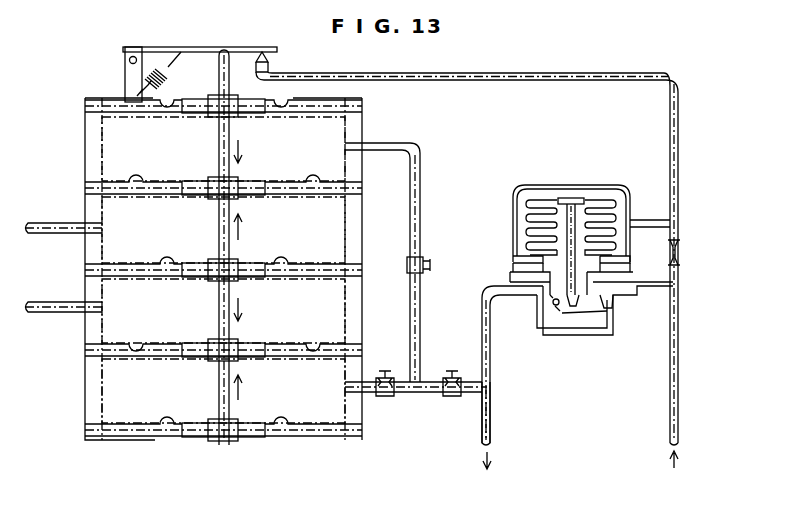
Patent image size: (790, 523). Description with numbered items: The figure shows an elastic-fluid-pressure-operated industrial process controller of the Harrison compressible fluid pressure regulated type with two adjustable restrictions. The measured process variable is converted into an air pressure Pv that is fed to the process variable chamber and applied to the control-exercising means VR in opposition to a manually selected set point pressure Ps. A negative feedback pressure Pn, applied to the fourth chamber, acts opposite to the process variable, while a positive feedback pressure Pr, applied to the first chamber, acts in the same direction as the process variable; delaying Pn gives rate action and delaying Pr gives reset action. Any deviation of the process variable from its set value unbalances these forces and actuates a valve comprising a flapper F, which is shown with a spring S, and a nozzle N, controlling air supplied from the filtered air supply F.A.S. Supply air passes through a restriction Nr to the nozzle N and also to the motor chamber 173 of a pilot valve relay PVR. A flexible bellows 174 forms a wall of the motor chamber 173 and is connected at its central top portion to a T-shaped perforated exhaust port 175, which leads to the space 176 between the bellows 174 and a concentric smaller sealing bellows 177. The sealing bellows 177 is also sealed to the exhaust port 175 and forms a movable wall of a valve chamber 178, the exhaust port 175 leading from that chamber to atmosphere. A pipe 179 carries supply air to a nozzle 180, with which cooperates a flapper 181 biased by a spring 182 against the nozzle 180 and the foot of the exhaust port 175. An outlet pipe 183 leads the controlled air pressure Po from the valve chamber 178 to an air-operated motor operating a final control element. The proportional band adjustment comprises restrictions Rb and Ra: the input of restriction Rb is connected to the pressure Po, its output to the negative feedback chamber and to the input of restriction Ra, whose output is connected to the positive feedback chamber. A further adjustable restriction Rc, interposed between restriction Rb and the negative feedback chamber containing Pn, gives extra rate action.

The flapper F is at (243, 48).
The spring S is at (165, 74).
The nozzle N is at (270, 66).
The control-exercising means VR is at (232, 66).
The positive feedback pressure Pr is at (223, 149).
The set point pressure Ps is at (223, 230).
The process variable pressure Pv is at (223, 311).
The negative feedback pressure Pn is at (223, 391).
The restriction Ra is at (432, 266).
The restriction Rb is at (452, 370).
The restriction Rc is at (385, 370).
The pilot valve relay PVR is at (577, 172).
The motor chamber 173 is at (538, 184).
The flexible bellows 174 is at (528, 211).
The T-shaped perforated exhaust port 175 is at (580, 199).
The space 176 is at (604, 202).
The sealing bellows 177 is at (528, 236).
The valve chamber 178 is at (565, 320).
The pipe 179 is at (648, 290).
The nozzle 180 is at (611, 309).
The flapper 181 is at (586, 317).
The spring 182 is at (560, 313).
The outlet pipe 183 is at (481, 311).
The restriction Nr is at (681, 252).
The controlled air pressure Po is at (487, 443).
The filtered air supply F.A.S is at (674, 467).